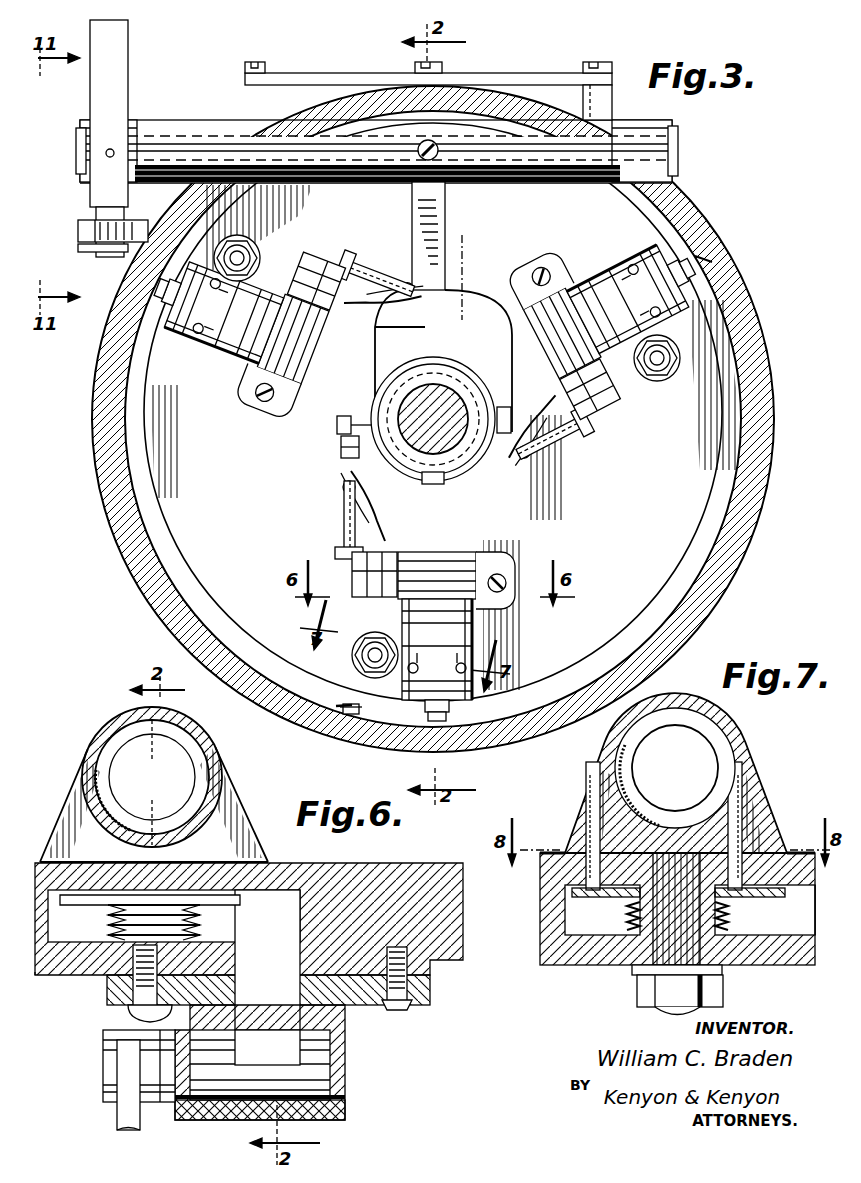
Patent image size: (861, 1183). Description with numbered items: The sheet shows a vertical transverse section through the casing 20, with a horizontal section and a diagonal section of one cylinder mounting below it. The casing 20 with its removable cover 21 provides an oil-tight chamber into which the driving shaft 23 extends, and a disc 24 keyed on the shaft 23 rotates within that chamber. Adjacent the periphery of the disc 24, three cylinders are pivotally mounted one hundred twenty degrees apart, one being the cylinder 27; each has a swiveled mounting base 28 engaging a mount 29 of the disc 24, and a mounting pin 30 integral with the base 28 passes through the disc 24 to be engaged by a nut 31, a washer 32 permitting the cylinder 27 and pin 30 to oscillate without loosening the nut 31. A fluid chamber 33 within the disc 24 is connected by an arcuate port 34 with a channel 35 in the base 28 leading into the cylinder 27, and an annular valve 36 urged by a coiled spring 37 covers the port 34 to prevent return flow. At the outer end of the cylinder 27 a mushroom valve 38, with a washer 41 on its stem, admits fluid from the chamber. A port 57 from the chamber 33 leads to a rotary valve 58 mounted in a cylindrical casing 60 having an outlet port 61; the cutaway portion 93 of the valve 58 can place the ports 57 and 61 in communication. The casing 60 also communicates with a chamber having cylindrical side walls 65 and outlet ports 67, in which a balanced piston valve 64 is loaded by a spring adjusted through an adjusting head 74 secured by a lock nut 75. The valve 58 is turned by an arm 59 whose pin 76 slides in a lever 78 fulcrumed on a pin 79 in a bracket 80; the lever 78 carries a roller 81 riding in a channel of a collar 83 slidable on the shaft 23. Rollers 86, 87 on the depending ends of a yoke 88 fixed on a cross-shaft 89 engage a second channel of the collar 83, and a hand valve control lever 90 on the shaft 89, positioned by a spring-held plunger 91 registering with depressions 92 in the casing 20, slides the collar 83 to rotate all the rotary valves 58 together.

In FIG. 3, the casing 20 is at (114, 527).
In FIG. 3, the removable cover 21 is at (328, 80).
In FIG. 3, the driving shaft 23 is at (428, 452).
In FIG. 3, the disc 24 is at (700, 470).
In FIG. 6, the disc 24 is at (412, 870).
In FIG. 7, the disc 24 is at (545, 953).
In FIG. 6, the cylinder 27 is at (210, 755).
In FIG. 7, the cylinder 27 is at (742, 727).
In FIG. 6, the swiveled mounting base 28 is at (228, 800).
In FIG. 7, the swiveled mounting base 28 is at (745, 797).
In FIG. 6, the mount 29 is at (270, 864).
In FIG. 7, the mount 29 is at (790, 850).
In FIG. 3, the mounting pin 30 is at (370, 646).
In FIG. 6, the mounting pin 30 is at (92, 975).
In FIG. 7, the mounting pin 30 is at (653, 985).
In FIG. 3, the nut 31 is at (352, 656).
In FIG. 6, the nut 31 is at (132, 1012).
In FIG. 7, the nut 31 is at (723, 998).
In FIG. 3, the washer 32 is at (364, 672).
In FIG. 7, the washer 32 is at (722, 970).
In FIG. 6, the fluid chamber 33 is at (322, 870).
In FIG. 7, the fluid chamber 33 is at (795, 925).
In FIG. 7, the port 34 is at (765, 890).
In FIG. 7, the channel 35 is at (738, 785).
In FIG. 6, the annular valve 36 is at (228, 900).
In FIG. 7, the annular valve 36 is at (600, 897).
In FIG. 6, the coiled spring 37 is at (105, 926).
In FIG. 7, the coiled spring 37 is at (625, 920).
In FIG. 3, the mushroom valve 38 is at (352, 716).
In FIG. 6, the mushroom valve 38 is at (180, 755).
In FIG. 7, the mushroom valve 38 is at (635, 760).
In FIG. 3, the washer 41 is at (345, 712).
In FIG. 6, the port 57 is at (300, 1010).
In FIG. 3, the rotary valve 58 is at (266, 406).
In FIG. 6, the rotary valve 58 is at (345, 1078).
In FIG. 3, the arm 59 is at (592, 416).
In FIG. 6, the arm 59 is at (117, 1118).
In FIG. 3, the cylindrical casing 60 is at (560, 364).
In FIG. 6, the cylindrical casing 60 is at (345, 1108).
In FIG. 3, the outlet port 61 is at (562, 350).
In FIG. 3, the balanced piston valve 64 is at (250, 362).
In FIG. 3, the cylindrical side walls 65 is at (226, 338).
In FIG. 3, the outlet ports 67 is at (462, 664).
In FIG. 3, the adjusting head 74 is at (430, 722).
In FIG. 3, the lock nut 75 is at (688, 262).
In FIG. 3, the pin 76 is at (580, 440).
In FIG. 3, the lever 78 is at (548, 462).
In FIG. 3, the pin 79 is at (500, 492).
In FIG. 3, the bracket 80 is at (365, 474).
In FIG. 3, the roller 81 is at (352, 446).
In FIG. 3, the collar 83 is at (442, 484).
In FIG. 3, the roller 86 is at (344, 416).
In FIG. 3, the roller 87 is at (508, 410).
In FIG. 3, the yoke 88 is at (474, 300).
In FIG. 3, the cross-shaft 89 is at (678, 149).
In FIG. 3, the hand valve control lever 90 is at (122, 62).
In FIG. 3, the spring-held plunger 91 is at (115, 246).
In FIG. 3, the depressions 92 is at (120, 256).
In FIG. 6, the cutaway portion 93 is at (330, 1050).